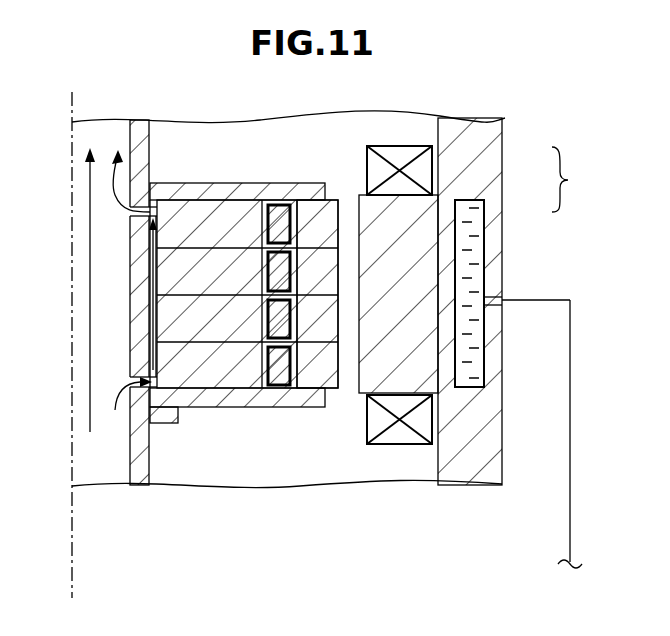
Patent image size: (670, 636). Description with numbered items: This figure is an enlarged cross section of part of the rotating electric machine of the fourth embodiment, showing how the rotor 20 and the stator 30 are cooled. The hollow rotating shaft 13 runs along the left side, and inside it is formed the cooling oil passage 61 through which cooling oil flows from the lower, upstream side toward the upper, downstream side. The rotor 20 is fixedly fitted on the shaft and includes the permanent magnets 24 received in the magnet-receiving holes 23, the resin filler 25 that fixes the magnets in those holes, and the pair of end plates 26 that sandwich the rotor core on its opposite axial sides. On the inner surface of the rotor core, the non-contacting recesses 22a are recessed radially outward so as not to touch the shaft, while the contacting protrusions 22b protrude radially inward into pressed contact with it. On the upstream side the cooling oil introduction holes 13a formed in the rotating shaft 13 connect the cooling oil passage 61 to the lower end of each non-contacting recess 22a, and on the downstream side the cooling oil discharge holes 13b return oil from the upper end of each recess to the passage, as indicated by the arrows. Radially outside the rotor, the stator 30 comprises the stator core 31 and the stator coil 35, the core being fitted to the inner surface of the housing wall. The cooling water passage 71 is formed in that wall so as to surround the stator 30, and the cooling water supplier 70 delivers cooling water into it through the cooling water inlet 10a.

The rotating shaft 13 is at (158, 155).
The cooling oil introduction holes 13a is at (143, 374).
The cooling oil discharge holes 13b is at (130, 227).
The rotor 20 is at (247, 273).
The non-contacting recesses 22a is at (150, 274).
The contacting protrusions 22b is at (134, 322).
The magnet-receiving holes 23 is at (272, 206).
The permanent magnets 24 is at (285, 208).
The resin filler 25 is at (332, 200).
The end plates 26 is at (208, 192).
The stator 30 is at (574, 179).
The stator core 31 is at (415, 215).
The stator coil 35 is at (420, 170).
The cooling oil passage 61 is at (95, 450).
The cooling water supplier 70 is at (562, 518).
The cooling water passage 71 is at (488, 257).
The cooling water inlet 10a is at (502, 311).